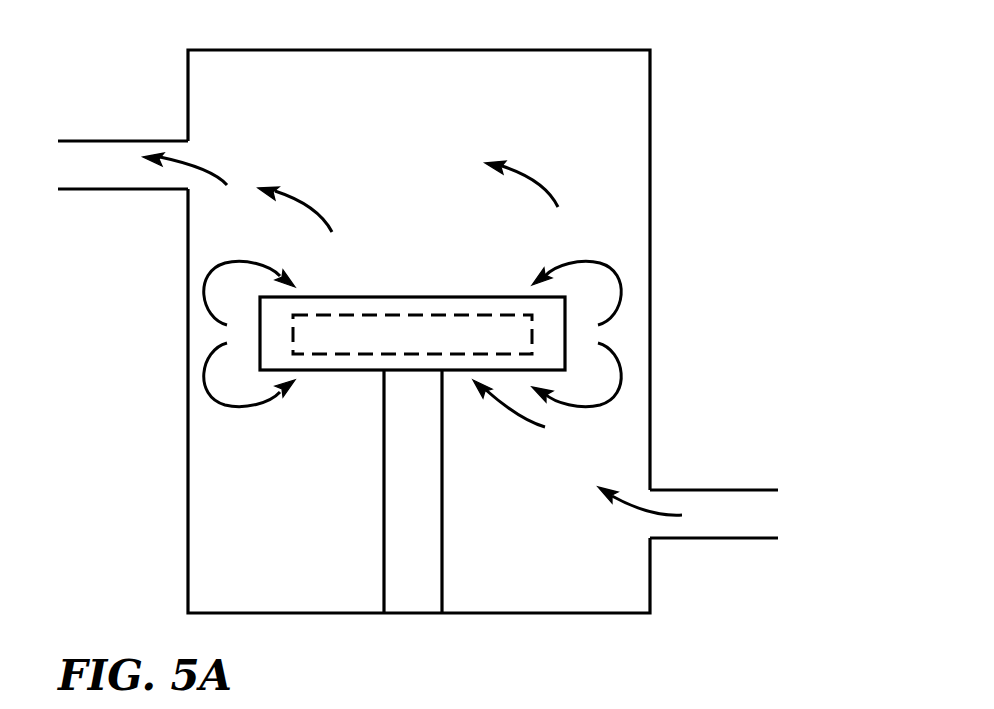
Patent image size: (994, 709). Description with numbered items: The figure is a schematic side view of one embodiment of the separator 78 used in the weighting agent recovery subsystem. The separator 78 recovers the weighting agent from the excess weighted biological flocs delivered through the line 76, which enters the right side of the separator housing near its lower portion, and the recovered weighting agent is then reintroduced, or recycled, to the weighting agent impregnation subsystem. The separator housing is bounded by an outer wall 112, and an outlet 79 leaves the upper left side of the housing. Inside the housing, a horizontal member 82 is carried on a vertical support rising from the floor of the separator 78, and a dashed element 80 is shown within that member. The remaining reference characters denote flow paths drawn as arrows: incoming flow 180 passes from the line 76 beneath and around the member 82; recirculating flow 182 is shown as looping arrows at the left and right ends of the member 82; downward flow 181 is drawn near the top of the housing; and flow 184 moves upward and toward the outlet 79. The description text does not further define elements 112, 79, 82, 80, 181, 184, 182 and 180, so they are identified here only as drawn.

The separator 78 is at (729, 69).
The chamber wall 112 is at (685, 186).
The outlet 79 is at (100, 140).
The line 76 is at (763, 490).
The support 82 is at (384, 297).
The substrate / wafer 80 is at (422, 346).
The downward gas flow 181 is at (403, 140).
The gas flow toward outlet 184 is at (203, 163).
The recirculating gas flow 182 is at (235, 260).
The incoming gas flow 180 is at (502, 406).